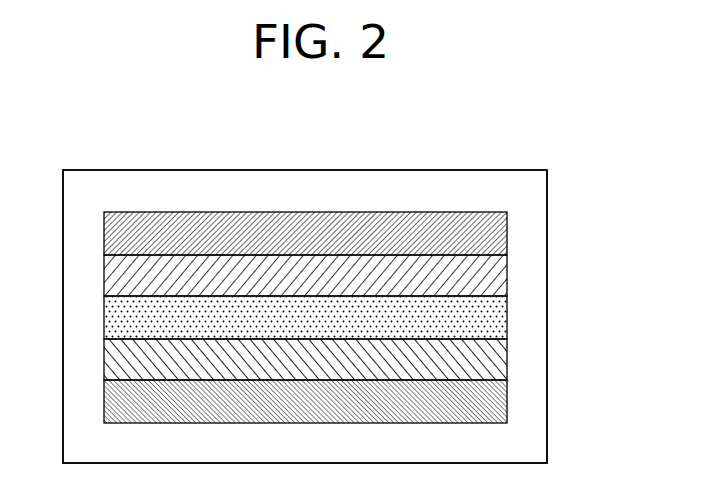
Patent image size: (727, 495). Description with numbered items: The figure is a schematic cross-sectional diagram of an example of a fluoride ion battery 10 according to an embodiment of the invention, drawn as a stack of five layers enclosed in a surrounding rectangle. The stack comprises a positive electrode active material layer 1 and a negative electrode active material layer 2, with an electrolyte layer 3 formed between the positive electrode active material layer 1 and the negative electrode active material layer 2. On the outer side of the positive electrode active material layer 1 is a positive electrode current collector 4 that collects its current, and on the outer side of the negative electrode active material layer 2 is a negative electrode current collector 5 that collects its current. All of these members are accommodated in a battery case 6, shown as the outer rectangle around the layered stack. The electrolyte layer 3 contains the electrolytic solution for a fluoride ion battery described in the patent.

The fluoride ion battery 10 is at (530, 140).
The battery case 6 is at (520, 199).
The positive electrode current collector 4 is at (482, 240).
The positive electrode active material layer 1 is at (482, 280).
The electrolyte layer 3 is at (478, 323).
The negative electrode active material layer 2 is at (478, 365).
The negative electrode current collector 5 is at (482, 405).